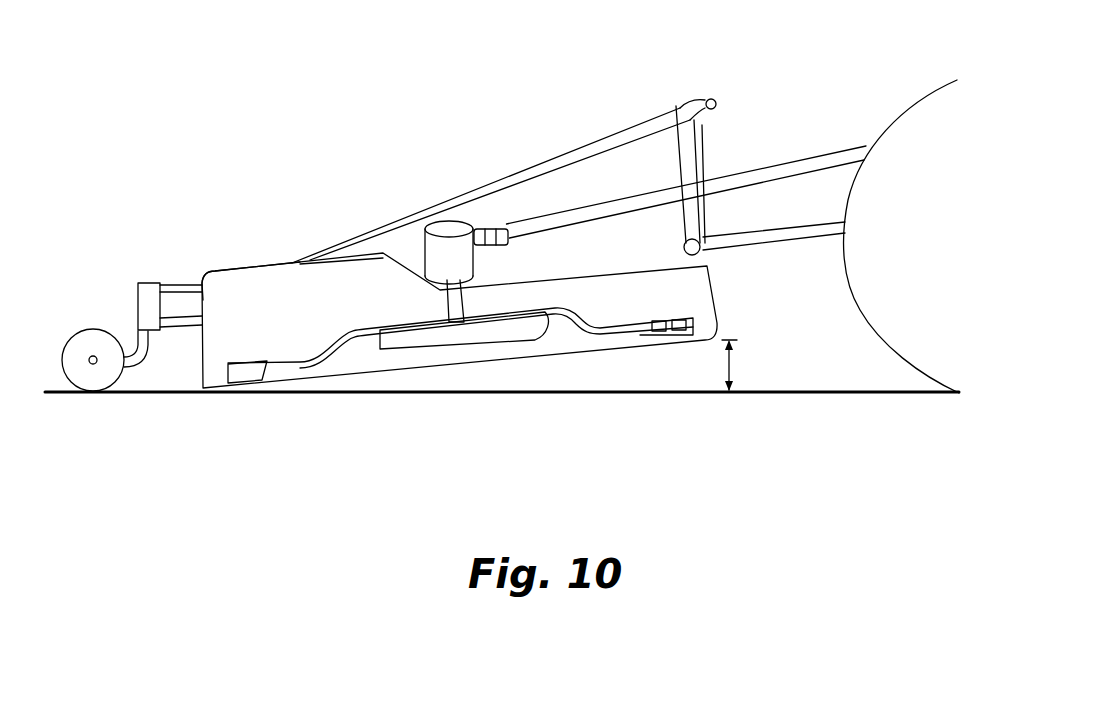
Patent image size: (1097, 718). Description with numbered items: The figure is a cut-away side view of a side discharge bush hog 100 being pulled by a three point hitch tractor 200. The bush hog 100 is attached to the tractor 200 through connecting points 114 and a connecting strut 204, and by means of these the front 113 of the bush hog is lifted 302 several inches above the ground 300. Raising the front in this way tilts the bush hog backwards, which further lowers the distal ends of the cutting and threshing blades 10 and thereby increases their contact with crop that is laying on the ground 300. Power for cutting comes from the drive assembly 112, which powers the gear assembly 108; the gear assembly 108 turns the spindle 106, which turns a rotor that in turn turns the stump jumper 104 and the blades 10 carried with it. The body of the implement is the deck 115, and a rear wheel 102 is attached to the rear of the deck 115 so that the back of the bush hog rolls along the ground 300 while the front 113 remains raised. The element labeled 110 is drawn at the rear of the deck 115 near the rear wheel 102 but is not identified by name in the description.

The side discharge bush hog 100 is at (183, 218).
The rear wheel 102 is at (73, 368).
The stump jumper 104 is at (433, 343).
The spindle 106 is at (452, 290).
The gear assembly 108 is at (433, 237).
The motor housing 110 is at (212, 323).
The drive assembly 112 is at (767, 158).
The front 113 is at (705, 282).
The connecting points 114 is at (683, 235).
The deck 115 is at (215, 283).
The cutting and threshing blades 10 is at (303, 358).
The three point hitch tractor 200 is at (917, 345).
The connecting strut 204 is at (803, 233).
The ground 300 is at (677, 393).
The lifted height 302 is at (730, 358).